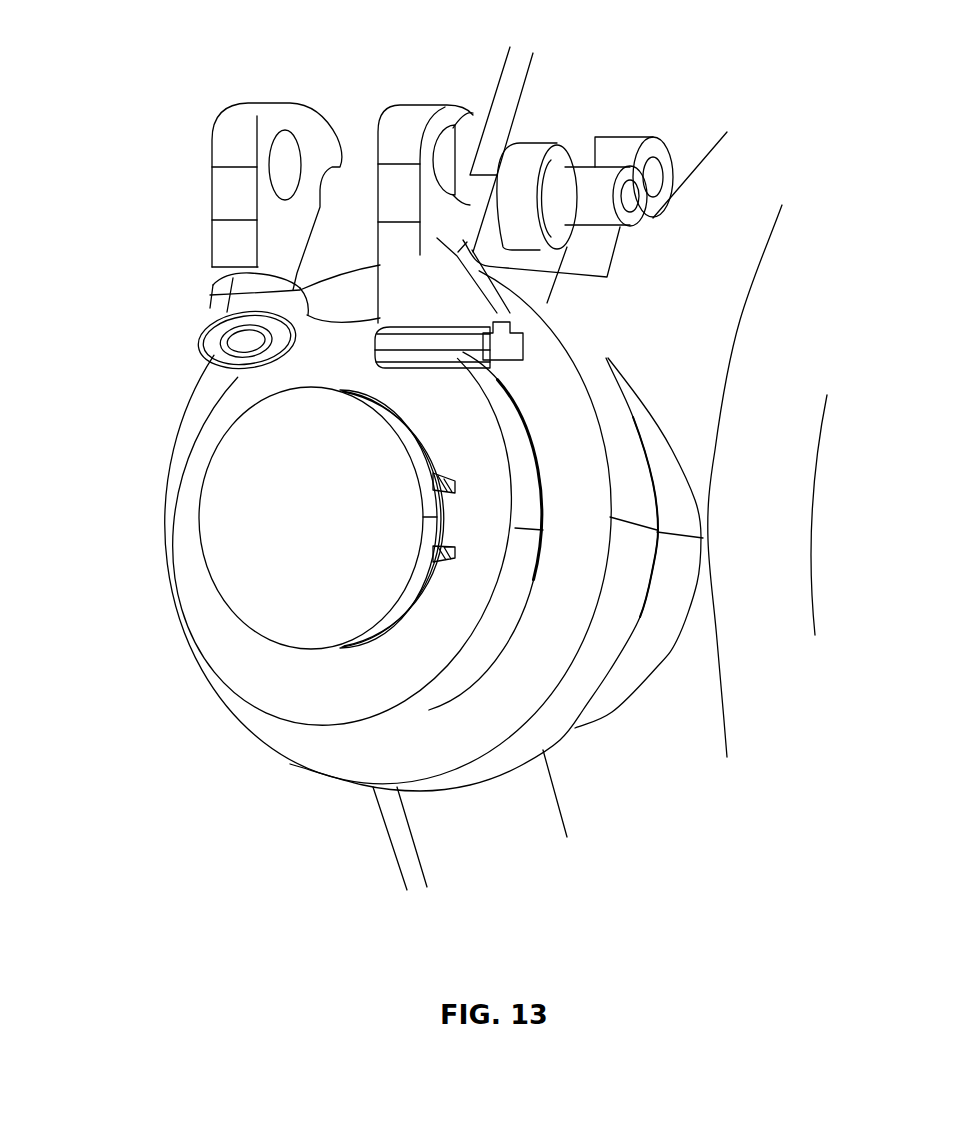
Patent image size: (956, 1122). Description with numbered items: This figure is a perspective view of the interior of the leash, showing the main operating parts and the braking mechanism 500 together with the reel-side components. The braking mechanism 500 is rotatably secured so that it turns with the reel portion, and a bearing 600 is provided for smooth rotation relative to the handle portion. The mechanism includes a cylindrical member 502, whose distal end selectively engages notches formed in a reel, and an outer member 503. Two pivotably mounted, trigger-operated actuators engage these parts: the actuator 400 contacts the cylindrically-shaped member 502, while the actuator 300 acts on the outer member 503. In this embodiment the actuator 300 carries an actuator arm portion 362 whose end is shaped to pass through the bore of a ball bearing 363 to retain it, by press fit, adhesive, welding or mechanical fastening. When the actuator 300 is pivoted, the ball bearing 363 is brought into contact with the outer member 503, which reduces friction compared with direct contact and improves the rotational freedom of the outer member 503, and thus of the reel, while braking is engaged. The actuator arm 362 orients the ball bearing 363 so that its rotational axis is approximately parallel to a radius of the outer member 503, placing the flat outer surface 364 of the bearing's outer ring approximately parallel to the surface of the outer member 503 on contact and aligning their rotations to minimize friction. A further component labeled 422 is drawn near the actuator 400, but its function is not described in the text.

The actuator 300 is at (222, 147).
The actuator arm portion 362 is at (223, 253).
The flat outer surface 364 is at (222, 300).
The ball bearing 363 is at (213, 350).
The actuator 400 is at (417, 113).
The bracket clip 422 is at (510, 345).
The braking mechanism 500 is at (633, 667).
The cylindrical member 502 is at (267, 597).
The outer member 503 is at (293, 683).
The bearing 600 is at (350, 783).